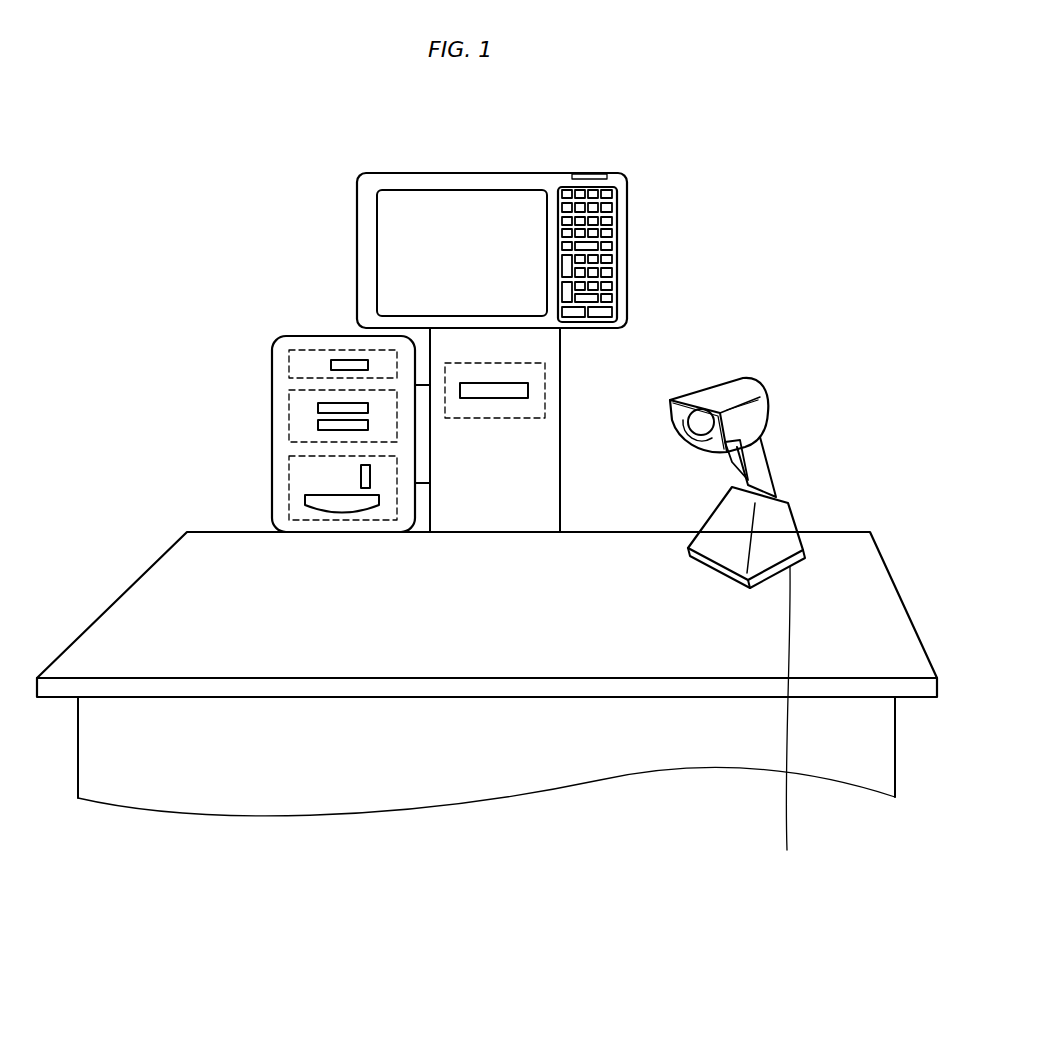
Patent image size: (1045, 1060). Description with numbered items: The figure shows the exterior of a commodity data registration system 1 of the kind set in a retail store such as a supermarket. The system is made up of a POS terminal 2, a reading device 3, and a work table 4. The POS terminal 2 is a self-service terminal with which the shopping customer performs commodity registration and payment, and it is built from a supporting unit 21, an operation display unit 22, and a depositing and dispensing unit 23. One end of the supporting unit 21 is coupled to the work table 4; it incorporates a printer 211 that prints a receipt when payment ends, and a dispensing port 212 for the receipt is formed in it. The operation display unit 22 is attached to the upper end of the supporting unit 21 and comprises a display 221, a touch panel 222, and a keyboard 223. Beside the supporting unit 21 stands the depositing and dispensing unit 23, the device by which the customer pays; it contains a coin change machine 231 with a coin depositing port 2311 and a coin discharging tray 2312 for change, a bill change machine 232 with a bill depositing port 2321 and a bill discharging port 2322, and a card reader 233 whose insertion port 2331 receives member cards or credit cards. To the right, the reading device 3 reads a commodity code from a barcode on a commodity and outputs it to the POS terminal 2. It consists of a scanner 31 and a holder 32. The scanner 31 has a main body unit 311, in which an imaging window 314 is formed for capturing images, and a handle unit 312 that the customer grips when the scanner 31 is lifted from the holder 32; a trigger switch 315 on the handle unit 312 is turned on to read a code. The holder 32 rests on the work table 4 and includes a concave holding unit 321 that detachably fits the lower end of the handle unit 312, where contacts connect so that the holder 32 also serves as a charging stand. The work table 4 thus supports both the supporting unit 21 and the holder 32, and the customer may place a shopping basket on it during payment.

The commodity data registration system 1 is at (733, 241).
The POS terminal 2 is at (296, 192).
The reading device 3 is at (780, 345).
The work table 4 is at (145, 598).
The supporting unit 21 is at (560, 350).
The printer 211 is at (545, 380).
The dispensing port 212 is at (528, 391).
The operation display unit 22 is at (497, 172).
The display 221 is at (433, 205).
The touch panel 222 is at (393, 257).
The keyboard 223 is at (612, 188).
The depositing and dispensing unit 23 is at (330, 336).
The coin change machine 231 is at (289, 485).
The coin depositing port 2311 is at (370, 477).
The coin discharging tray 2312 is at (345, 513).
The bill change machine 232 is at (289, 413).
The bill depositing port 2321 is at (370, 408).
The bill discharging port 2322 is at (370, 427).
The card reader 233 is at (289, 362).
The insertion port 2331 is at (331, 365).
The scanner 31 is at (700, 493).
The main body unit 311 is at (721, 385).
The handle unit 312 is at (770, 450).
The imaging window 314 is at (683, 428).
The trigger switch 315 is at (723, 458).
The holder 32 is at (787, 723).
The holding unit 321 is at (795, 503).